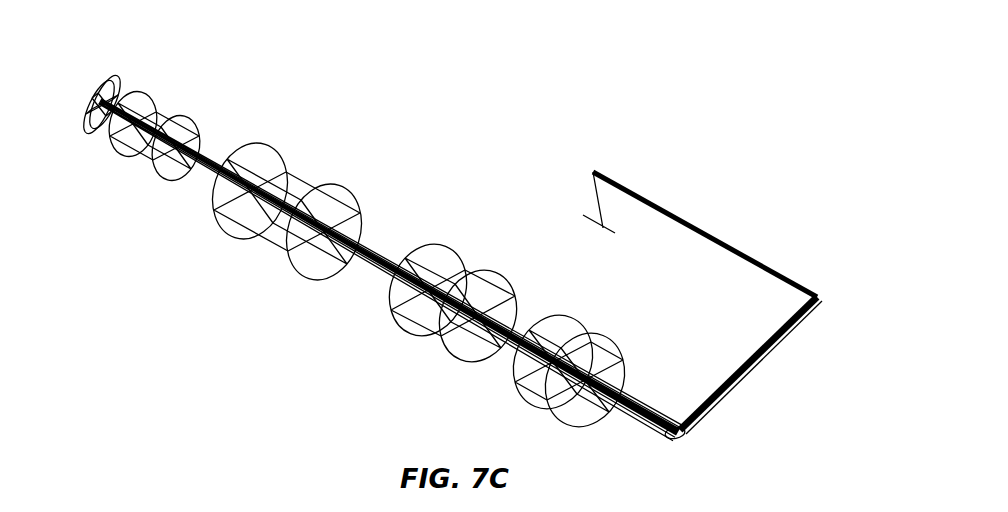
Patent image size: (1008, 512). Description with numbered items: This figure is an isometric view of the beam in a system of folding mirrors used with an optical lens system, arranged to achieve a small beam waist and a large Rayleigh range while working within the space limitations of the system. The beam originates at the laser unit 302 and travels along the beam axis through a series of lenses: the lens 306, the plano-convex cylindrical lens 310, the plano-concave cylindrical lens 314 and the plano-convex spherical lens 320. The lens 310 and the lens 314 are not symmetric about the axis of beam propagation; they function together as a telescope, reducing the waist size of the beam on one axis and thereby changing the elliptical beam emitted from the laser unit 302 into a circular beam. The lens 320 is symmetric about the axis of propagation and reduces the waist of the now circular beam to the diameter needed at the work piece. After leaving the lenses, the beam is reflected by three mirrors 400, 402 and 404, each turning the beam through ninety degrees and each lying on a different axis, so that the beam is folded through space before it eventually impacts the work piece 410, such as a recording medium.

The laser unit 302 is at (86, 121).
The lens 306 is at (178, 112).
The plano-convex cylindrical lens 310 is at (256, 244).
The plano-concave cylindrical lens 314 is at (428, 344).
The plano-convex spherical lens 320 is at (534, 408).
The mirror 400 is at (688, 433).
The mirror 402 is at (818, 294).
The mirror 404 is at (593, 171).
The work piece 410 is at (606, 232).